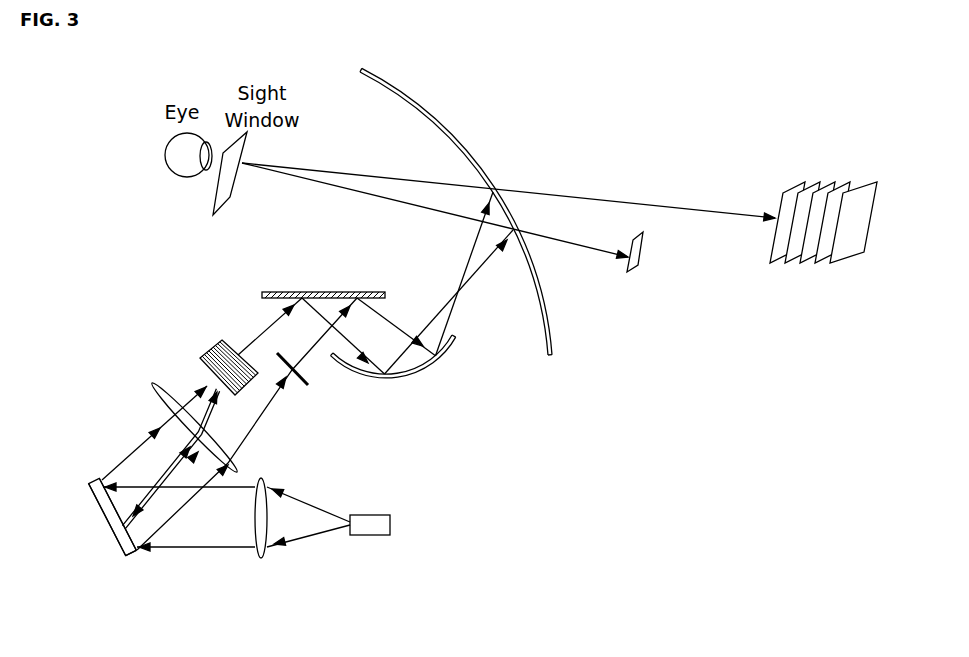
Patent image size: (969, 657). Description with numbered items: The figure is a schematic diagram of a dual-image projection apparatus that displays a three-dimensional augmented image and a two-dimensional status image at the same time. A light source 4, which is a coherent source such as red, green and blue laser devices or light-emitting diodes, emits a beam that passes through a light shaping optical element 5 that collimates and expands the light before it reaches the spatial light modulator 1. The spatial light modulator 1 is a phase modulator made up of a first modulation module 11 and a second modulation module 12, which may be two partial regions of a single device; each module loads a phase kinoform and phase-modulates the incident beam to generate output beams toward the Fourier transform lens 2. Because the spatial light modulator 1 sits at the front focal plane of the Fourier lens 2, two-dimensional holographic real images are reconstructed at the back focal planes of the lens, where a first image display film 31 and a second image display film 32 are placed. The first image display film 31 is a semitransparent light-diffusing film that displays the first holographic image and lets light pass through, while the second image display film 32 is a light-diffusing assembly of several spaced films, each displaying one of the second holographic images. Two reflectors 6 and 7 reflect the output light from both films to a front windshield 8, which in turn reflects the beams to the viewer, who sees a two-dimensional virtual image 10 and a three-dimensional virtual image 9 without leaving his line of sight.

The spatial light modulator 1 is at (93, 538).
The first modulation module 11 is at (116, 531).
The second modulation module 12 is at (100, 520).
The Fourier transform lens 2 is at (185, 417).
The first image display film 31 is at (293, 388).
The second image display film 32 is at (229, 354).
The light source 4 is at (373, 507).
The light shaping optical element 5 is at (270, 502).
The reflector 6 is at (321, 280).
The reflector 7 is at (393, 372).
The front windshield 8 is at (456, 211).
The 3D virtual image 9 is at (823, 202).
The 2D virtual image 10 is at (625, 272).